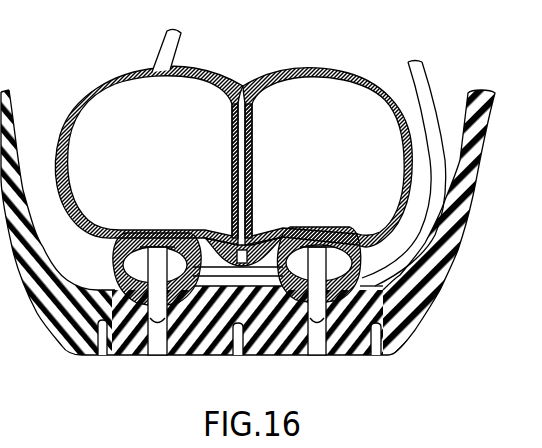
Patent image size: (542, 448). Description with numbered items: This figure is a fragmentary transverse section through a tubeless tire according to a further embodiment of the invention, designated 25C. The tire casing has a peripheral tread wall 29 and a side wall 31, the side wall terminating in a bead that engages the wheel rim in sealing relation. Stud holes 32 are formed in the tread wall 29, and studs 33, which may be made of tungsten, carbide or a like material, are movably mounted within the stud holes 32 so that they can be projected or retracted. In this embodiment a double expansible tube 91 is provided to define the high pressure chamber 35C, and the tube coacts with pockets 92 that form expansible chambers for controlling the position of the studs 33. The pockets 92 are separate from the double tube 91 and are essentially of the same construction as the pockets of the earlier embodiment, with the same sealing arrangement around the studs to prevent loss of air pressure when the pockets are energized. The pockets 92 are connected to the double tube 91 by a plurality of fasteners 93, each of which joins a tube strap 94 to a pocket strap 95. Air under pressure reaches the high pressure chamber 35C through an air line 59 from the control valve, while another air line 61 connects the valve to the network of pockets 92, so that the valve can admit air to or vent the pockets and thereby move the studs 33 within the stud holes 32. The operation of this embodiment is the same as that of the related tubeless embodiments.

The tubeless tire embodiment 25C is at (252, 245).
The tread wall 29 is at (90, 347).
The side wall 31 is at (448, 236).
The stud hole 32 is at (162, 352).
The stud 33 is at (152, 312).
The high pressure chamber 35C is at (233, 129).
The air line 59 is at (160, 49).
The air line 61 is at (422, 73).
The double expansible tube 91 is at (339, 78).
The pocket 92 is at (112, 238).
The fastener 93 is at (230, 233).
The tube strap 94 is at (262, 228).
The pocket strap 95 is at (247, 263).